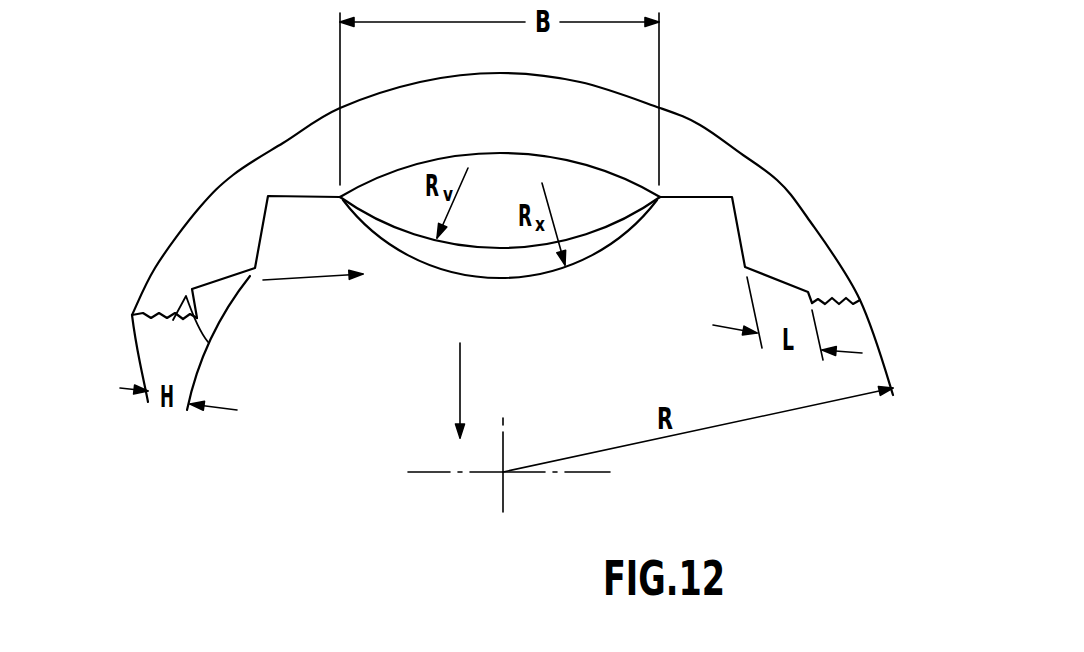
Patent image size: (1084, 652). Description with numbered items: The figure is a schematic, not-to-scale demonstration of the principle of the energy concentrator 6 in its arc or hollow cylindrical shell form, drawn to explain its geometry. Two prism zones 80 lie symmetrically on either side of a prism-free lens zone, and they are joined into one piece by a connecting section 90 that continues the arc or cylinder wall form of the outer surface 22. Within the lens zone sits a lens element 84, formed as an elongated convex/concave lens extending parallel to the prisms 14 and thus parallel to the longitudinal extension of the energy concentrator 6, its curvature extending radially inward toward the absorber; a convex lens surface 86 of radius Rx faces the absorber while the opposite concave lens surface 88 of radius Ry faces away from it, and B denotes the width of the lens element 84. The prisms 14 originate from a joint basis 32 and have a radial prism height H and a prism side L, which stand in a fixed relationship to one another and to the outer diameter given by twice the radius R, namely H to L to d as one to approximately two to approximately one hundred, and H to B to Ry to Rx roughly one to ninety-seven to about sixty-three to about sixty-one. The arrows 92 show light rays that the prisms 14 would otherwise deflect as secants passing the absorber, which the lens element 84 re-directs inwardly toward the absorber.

The energy concentrator 6 is at (775, 172).
The prisms 14 is at (250, 249).
The outer surface 22 is at (700, 125).
The joint basis 32 is at (162, 278).
The prism zones 80 is at (220, 186).
The lens element 84 is at (422, 252).
The convex lens surface 86 is at (592, 260).
The concave lens surface 88 is at (580, 233).
The connecting section 90 is at (572, 119).
The arrows 92 is at (458, 392).